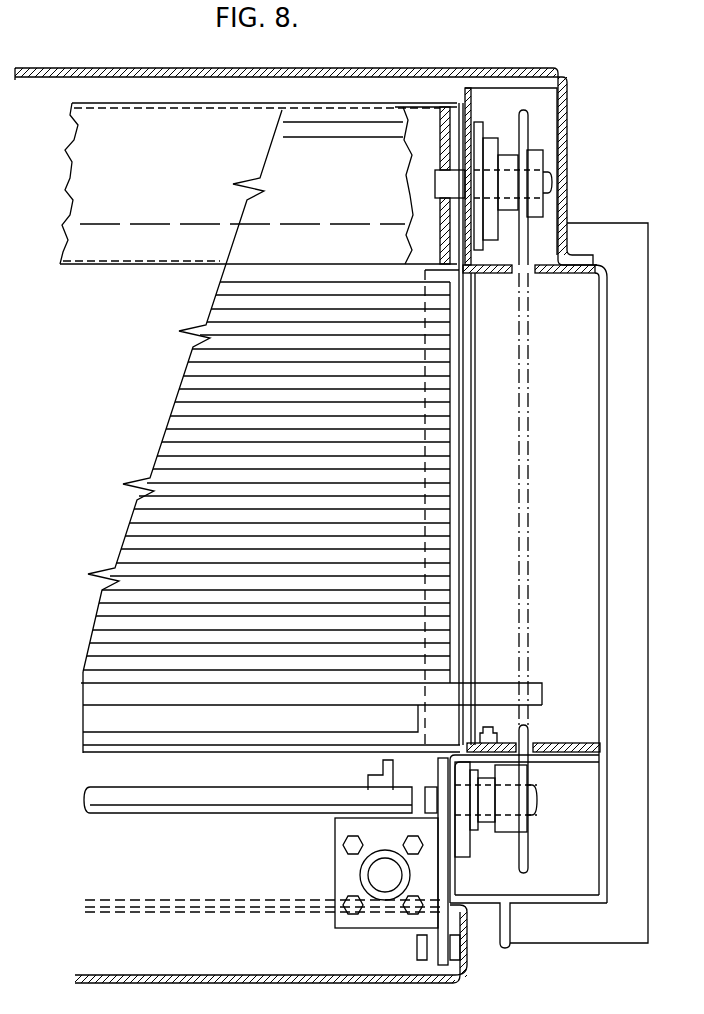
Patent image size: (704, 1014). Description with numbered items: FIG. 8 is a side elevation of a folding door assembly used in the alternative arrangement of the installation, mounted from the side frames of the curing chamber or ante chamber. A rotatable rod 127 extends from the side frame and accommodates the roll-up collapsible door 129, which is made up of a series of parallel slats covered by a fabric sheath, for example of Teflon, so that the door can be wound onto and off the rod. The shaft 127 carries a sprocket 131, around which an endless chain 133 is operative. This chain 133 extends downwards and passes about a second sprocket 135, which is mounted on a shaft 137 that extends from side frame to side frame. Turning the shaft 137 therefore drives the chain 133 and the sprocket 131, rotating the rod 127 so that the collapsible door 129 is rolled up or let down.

The rotatable rod 127 is at (552, 182).
The roll-up collapsible door 129 is at (178, 436).
The sprocket 131 is at (530, 111).
The endless chain 133 is at (525, 369).
The sprocket 135 is at (522, 875).
The shaft 137 is at (538, 802).